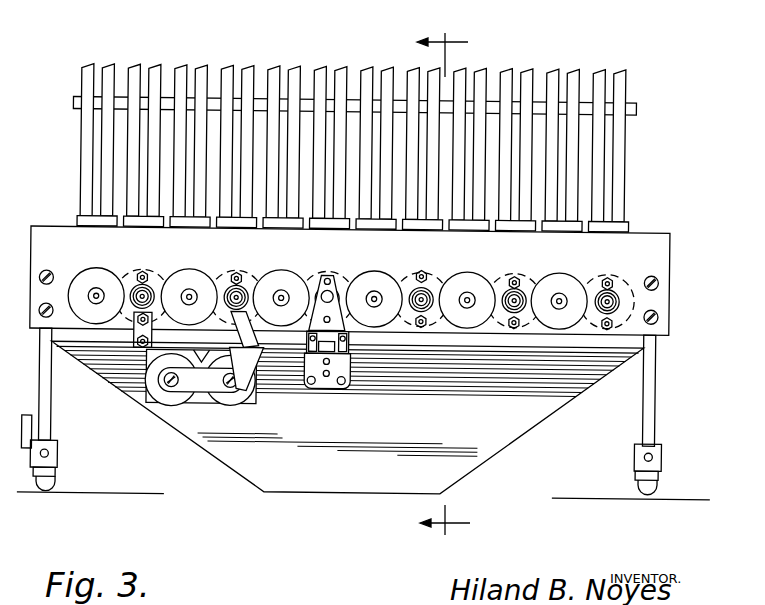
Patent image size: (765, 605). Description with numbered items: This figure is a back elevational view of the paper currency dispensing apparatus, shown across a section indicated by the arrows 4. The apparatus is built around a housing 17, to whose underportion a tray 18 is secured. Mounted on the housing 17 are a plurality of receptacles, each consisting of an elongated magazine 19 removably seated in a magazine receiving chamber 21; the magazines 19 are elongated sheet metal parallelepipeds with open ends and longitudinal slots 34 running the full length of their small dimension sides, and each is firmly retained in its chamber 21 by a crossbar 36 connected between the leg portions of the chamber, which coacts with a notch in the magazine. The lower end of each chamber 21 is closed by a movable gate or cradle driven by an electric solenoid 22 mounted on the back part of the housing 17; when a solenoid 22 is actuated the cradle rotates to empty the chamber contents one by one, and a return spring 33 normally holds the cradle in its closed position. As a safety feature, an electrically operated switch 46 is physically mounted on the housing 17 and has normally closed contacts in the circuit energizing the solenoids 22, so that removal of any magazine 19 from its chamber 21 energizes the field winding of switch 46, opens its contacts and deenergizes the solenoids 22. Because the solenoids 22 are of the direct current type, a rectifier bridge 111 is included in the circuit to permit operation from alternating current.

The section line 4 is at (443, 283).
The housing 17 is at (670, 286).
The tray 18 is at (512, 432).
The magazine 19 is at (617, 131).
The magazine receiving chamber 21 is at (232, 221).
The electric solenoid 22 is at (112, 284).
The return spring 33 is at (243, 290).
The longitudinal slot 34 is at (518, 206).
The crossbar 36 is at (551, 66).
The electrically operated switch 46 is at (345, 367).
The rectifier bridge 111 is at (174, 397).